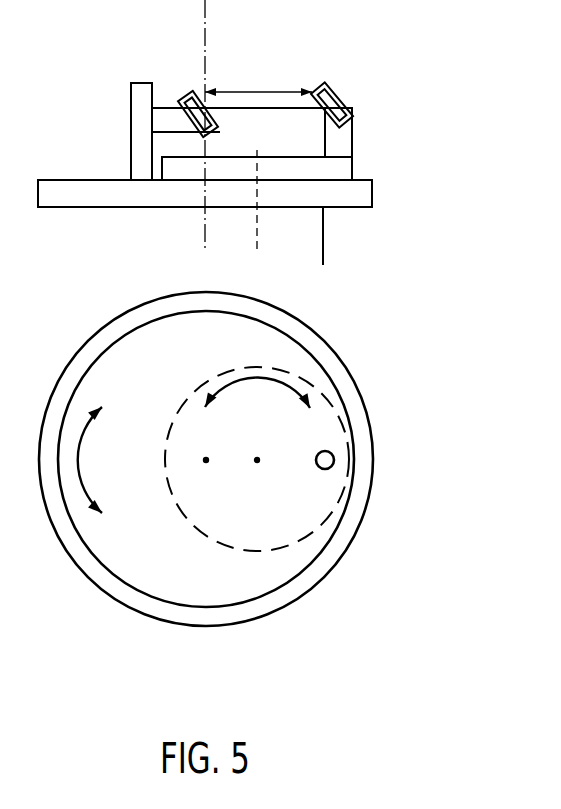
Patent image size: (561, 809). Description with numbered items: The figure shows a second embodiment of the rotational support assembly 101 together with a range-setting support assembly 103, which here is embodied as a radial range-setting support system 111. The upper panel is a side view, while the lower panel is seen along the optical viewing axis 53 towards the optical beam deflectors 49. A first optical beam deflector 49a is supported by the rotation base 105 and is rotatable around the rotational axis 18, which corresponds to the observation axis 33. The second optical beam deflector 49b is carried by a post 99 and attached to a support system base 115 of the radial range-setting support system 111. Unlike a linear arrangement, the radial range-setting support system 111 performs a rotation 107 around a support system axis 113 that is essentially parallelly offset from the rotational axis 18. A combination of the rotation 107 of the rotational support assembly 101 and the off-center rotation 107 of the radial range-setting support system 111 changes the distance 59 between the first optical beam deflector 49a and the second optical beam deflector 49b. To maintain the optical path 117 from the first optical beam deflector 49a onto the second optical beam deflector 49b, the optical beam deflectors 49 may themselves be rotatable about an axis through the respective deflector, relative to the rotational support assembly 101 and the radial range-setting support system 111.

The rotational support assembly 101 is at (101, 91).
The optical beam deflector 49 is at (255, 243).
The first optical beam deflector 49a is at (203, 98).
The second optical beam deflector 49b is at (313, 93).
The distance 59 is at (262, 91).
The post 99 is at (131, 153).
The optical path 117 is at (237, 110).
The support system base 115 is at (297, 157).
The range-setting support assembly 103 is at (307, 400).
The radial range-setting support system 111 is at (277, 640).
The rotation base 105 is at (367, 192).
The optical viewing axis 53 is at (325, 225).
The observation axis 33 is at (205, 212).
The rotational axis 18 is at (205, 245).
The support system axis 113 is at (257, 213).
The rotation 107 is at (83, 488).